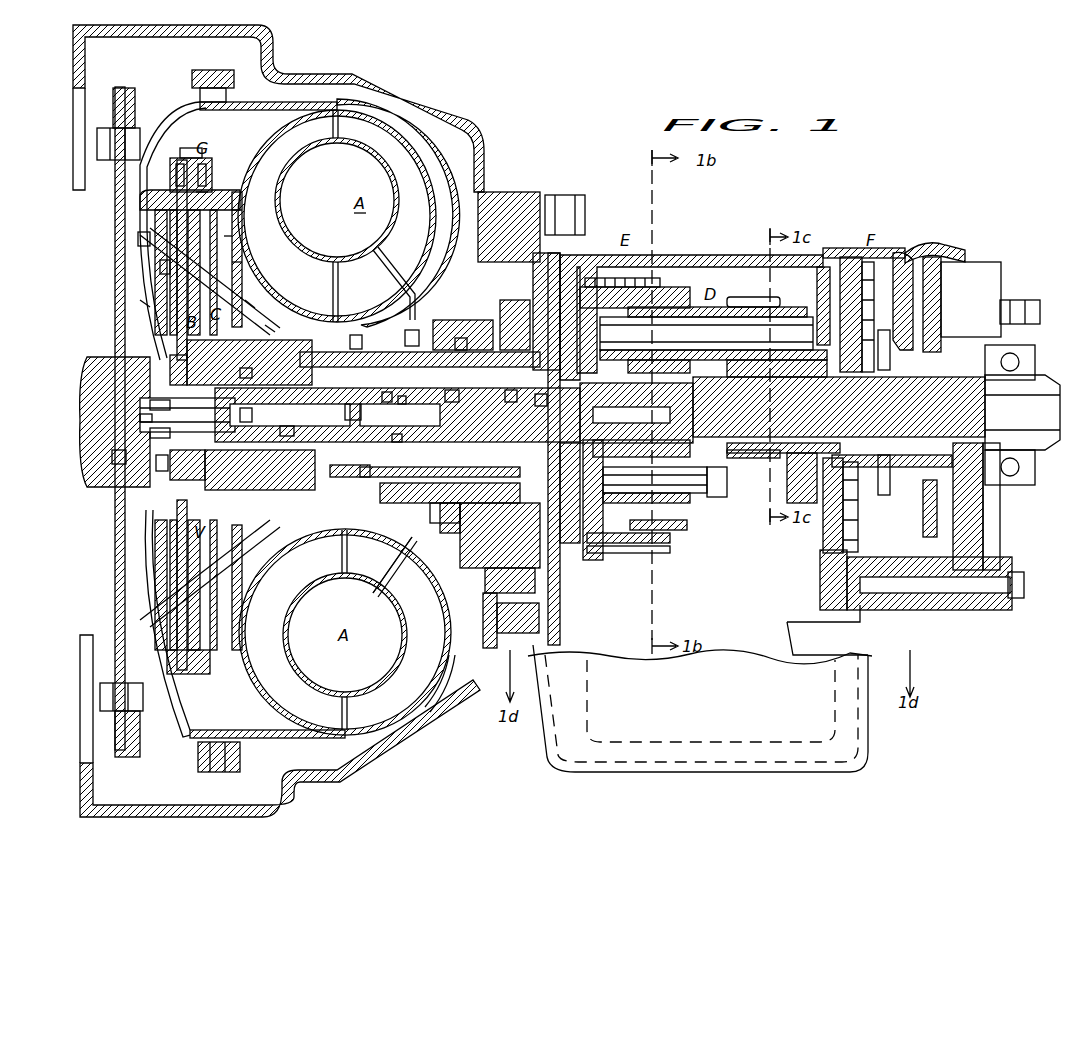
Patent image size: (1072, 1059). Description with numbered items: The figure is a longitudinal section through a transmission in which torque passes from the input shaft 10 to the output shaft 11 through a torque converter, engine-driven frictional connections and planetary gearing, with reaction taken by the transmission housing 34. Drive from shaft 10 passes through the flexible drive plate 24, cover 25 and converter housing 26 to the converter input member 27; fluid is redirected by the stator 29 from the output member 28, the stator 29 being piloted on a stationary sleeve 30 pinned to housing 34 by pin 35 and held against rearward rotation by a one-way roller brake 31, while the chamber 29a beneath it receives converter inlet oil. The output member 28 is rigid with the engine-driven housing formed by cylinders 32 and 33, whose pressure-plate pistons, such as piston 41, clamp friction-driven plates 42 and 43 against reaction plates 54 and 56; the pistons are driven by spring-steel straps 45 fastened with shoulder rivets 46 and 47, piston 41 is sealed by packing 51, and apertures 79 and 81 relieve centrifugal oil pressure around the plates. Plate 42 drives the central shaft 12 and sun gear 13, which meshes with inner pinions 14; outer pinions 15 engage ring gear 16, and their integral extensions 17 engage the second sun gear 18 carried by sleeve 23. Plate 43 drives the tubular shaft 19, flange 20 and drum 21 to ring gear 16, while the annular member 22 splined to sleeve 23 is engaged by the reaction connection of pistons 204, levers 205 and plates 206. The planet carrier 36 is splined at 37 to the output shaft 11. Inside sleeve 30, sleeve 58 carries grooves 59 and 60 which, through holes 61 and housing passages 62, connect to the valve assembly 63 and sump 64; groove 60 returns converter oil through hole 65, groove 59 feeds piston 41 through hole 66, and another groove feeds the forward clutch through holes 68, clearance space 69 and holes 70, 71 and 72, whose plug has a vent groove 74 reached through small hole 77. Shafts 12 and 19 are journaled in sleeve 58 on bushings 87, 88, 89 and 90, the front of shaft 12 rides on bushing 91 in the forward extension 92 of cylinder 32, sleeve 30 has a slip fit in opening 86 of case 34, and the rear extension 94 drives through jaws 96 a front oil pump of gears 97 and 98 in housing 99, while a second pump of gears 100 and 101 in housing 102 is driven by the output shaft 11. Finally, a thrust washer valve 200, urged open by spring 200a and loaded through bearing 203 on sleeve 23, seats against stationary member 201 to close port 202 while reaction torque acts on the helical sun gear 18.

The input shaft 10 is at (88, 372).
The output shaft 11 is at (1044, 408).
The central shaft 12 is at (482, 422).
The sun gear 13 is at (640, 395).
The inner planetary pinions 14 is at (700, 506).
The outer planetary pinions 15 is at (665, 312).
The ring gear 16 is at (655, 278).
The integral extensions 17 is at (762, 297).
The second sun gear 18 is at (760, 460).
The sleeve 19 is at (450, 396).
The flange 20 is at (590, 272).
The drum 21 is at (625, 556).
The annular member 22 is at (882, 348).
The sleeve 23 is at (770, 380).
The drive plate 24 is at (115, 190).
The cover 25 is at (190, 130).
The converter housing 26 is at (280, 104).
The input member 27 is at (420, 240).
The output member 28 is at (282, 262).
The stator 29 is at (370, 286).
The chamber 29a is at (405, 332).
The stationary sleeve 30 is at (425, 335).
The one-way roller brake 31 is at (352, 335).
The cylinder 32 is at (165, 205).
The cylinder 33 is at (230, 210).
The transmission housing 34 is at (740, 256).
The pin 35 is at (546, 311).
The planet pinion carrier 36 is at (612, 503).
The spline 37 is at (735, 480).
The piston 41 is at (272, 327).
The friction-driven plate 42 is at (160, 268).
The friction-driven plate 43 is at (255, 305).
The steel straps 45 is at (242, 262).
The shoulder rivets 46 is at (138, 240).
The shoulder rivets 47 is at (232, 238).
The packing 51 is at (254, 208).
The reaction plate 54 is at (180, 162).
The reaction plate 56 is at (203, 162).
The sleeve 58 is at (486, 345).
The groove 59 is at (510, 396).
The groove 60 is at (460, 504).
The holes 61 is at (562, 540).
The passages 62 is at (562, 603).
The valve assembly 63 is at (640, 712).
The sump 64 is at (690, 770).
The hole 65 is at (332, 478).
The hole 66 is at (246, 364).
The holes 68 is at (396, 409).
The clearance space 69 is at (386, 398).
The holes 70 is at (345, 412).
The holes 71 is at (240, 416).
The hole 72 is at (150, 412).
The groove 74 is at (150, 438).
The small hole 77 is at (140, 426).
The aperture 79 is at (140, 300).
The apertures 81 is at (207, 190).
The circular opening 86 is at (485, 535).
The bushing 87 is at (395, 438).
The bushing 88 is at (540, 400).
The bushing 89 is at (282, 430).
The bushing 90 is at (612, 395).
The bushing 91 is at (160, 460).
The forward extension 92 is at (115, 458).
The rear extension 94 is at (396, 560).
The jaws 96 is at (462, 338).
The external gear 97 is at (488, 556).
The external gear 98 is at (545, 290).
The stationary housing 99 is at (468, 522).
The gear 100 is at (1000, 540).
The gear 101 is at (992, 480).
The housing 102 is at (958, 596).
The thrust washer valve 200 is at (840, 380).
The compression spring 200a is at (818, 350).
The stationary member 201 is at (846, 270).
The port 202 is at (835, 512).
The bearing 203 is at (882, 385).
The pistons 204 is at (968, 272).
The levers 205 is at (992, 303).
The plates 206 is at (906, 258).